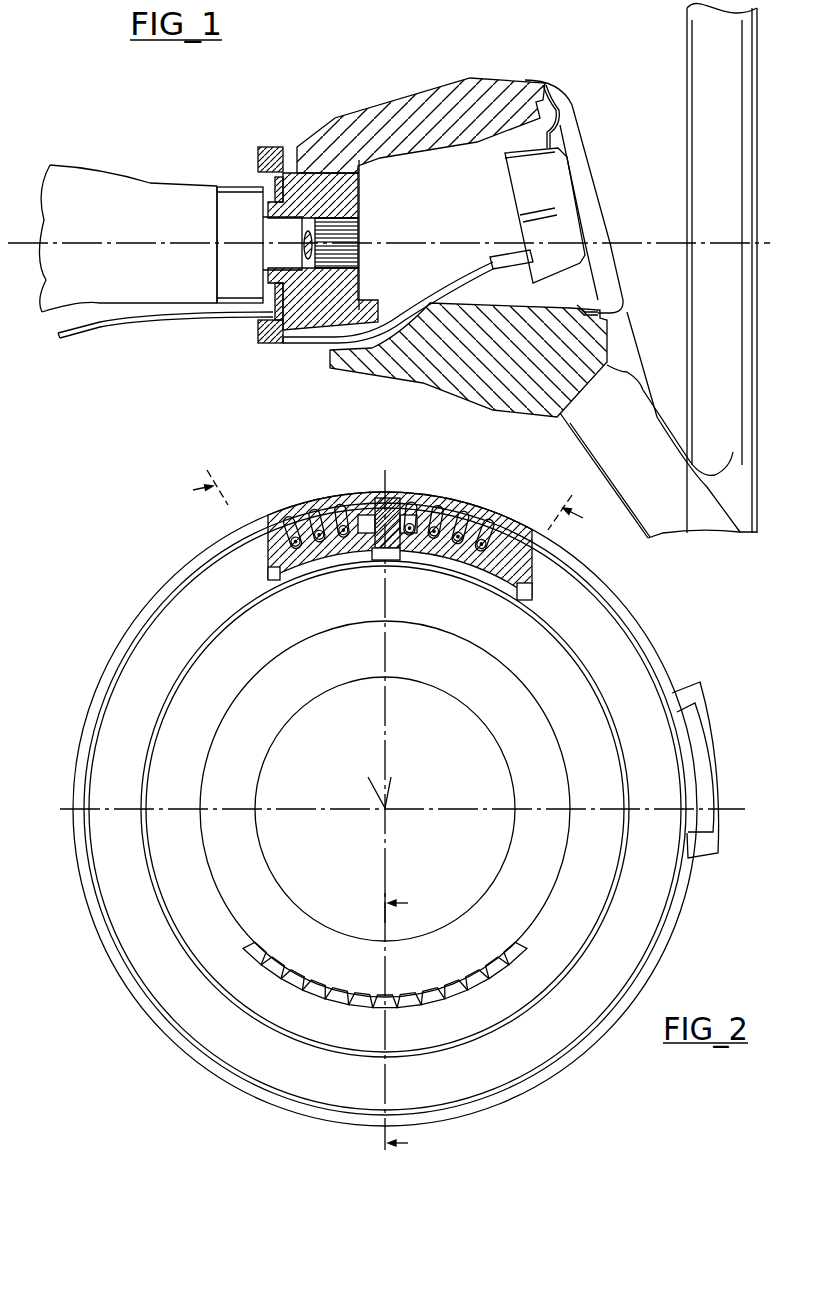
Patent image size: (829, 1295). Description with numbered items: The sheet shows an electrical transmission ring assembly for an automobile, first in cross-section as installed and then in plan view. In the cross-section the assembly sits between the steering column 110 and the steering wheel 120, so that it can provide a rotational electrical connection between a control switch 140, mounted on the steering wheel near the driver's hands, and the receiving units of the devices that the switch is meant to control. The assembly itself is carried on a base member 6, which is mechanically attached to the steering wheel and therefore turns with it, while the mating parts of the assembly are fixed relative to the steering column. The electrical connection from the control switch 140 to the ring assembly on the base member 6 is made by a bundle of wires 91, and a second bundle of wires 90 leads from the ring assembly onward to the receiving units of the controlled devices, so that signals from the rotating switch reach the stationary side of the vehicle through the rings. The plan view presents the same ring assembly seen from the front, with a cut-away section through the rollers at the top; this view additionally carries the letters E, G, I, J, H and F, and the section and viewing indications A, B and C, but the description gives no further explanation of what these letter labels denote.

In FIG. 1, the steering column 110 is at (147, 193).
In FIG. 1, the steering wheel 120 is at (420, 118).
In FIG. 1, the control switch 140 is at (547, 188).
In FIG. 1, the bundle of wires 90 is at (172, 319).
In FIG. 1, the bundle of wires 91 is at (317, 345).
In FIG. 1, the base member 6 is at (265, 345).
In FIG. 2, the roller E is at (288, 516).
In FIG. 2, the roller G is at (313, 510).
In FIG. 2, the roller I is at (340, 505).
In FIG. 2, the roller J is at (411, 503).
In FIG. 2, the roller H is at (438, 506).
In FIG. 2, the roller F is at (464, 512).
In FIG. 2, the roller / section line C is at (489, 520).
In FIG. 2, the section line B is at (388, 503).
In FIG. 2, the section line A is at (407, 1144).